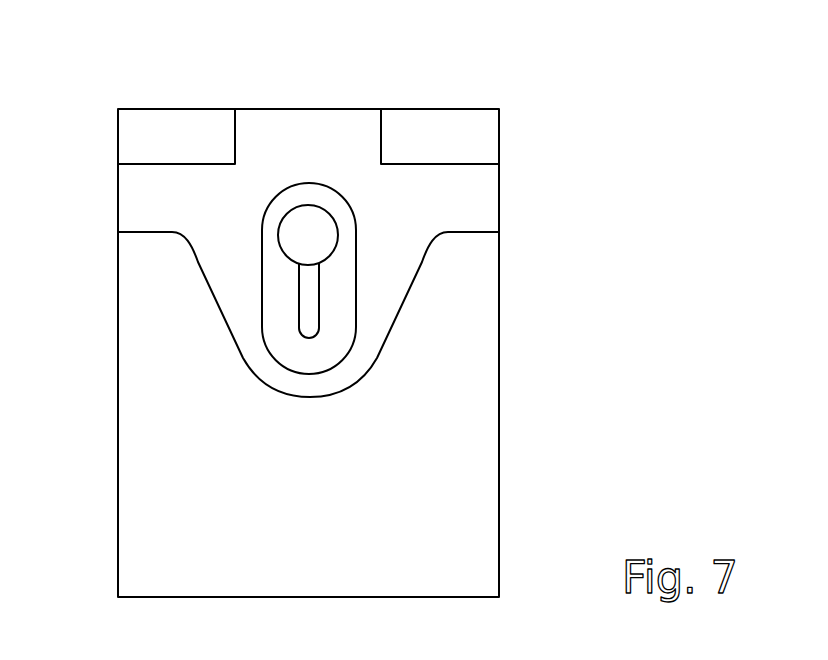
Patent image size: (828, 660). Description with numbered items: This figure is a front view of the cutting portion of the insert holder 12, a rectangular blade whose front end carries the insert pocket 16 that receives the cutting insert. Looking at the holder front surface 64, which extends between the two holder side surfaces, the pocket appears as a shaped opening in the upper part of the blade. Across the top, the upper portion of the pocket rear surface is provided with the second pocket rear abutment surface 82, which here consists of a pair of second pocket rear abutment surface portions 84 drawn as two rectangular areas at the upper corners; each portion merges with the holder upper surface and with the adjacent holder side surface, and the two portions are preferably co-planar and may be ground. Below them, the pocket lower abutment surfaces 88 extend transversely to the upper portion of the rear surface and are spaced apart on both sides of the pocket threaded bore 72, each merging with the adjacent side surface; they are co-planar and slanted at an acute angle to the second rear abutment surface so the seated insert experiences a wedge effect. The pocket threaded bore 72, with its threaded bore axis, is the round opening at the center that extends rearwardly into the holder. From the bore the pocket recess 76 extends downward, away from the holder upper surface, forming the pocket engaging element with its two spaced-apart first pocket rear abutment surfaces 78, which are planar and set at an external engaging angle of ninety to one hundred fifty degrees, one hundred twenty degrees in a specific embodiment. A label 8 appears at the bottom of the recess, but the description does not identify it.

The insert holder 12 is at (505, 78).
The insert pocket 16 is at (335, 138).
The second pocket rear abutment surface 82 is at (415, 140).
The second pocket rear abutment surface portions 84 is at (140, 132).
The pocket lower abutment surfaces 88 is at (141, 232).
The holder front surface 64 is at (480, 290).
The first pocket rear abutment surfaces 78 is at (286, 296).
The pocket recess 76 is at (286, 324).
The pocket threaded bore 72 is at (281, 224).
The slot 8 is at (308, 330).